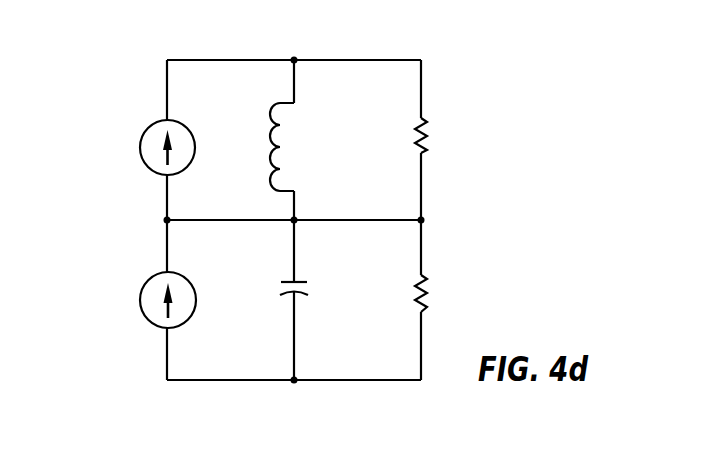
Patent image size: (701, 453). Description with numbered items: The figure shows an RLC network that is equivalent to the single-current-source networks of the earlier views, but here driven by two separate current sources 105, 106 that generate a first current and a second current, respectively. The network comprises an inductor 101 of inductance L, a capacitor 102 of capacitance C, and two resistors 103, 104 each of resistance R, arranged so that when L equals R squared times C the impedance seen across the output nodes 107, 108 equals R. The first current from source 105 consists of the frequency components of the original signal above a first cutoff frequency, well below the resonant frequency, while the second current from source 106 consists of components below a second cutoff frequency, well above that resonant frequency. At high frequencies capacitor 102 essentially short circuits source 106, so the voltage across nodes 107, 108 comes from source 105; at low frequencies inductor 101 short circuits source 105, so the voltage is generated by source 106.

The inductor 101 is at (287, 145).
The capacitor 102 is at (313, 291).
The resistor 103 is at (428, 138).
The resistor 104 is at (428, 298).
The current source 105 is at (195, 159).
The current source 106 is at (197, 312).
The node 107 is at (363, 59).
The node 108 is at (363, 381).